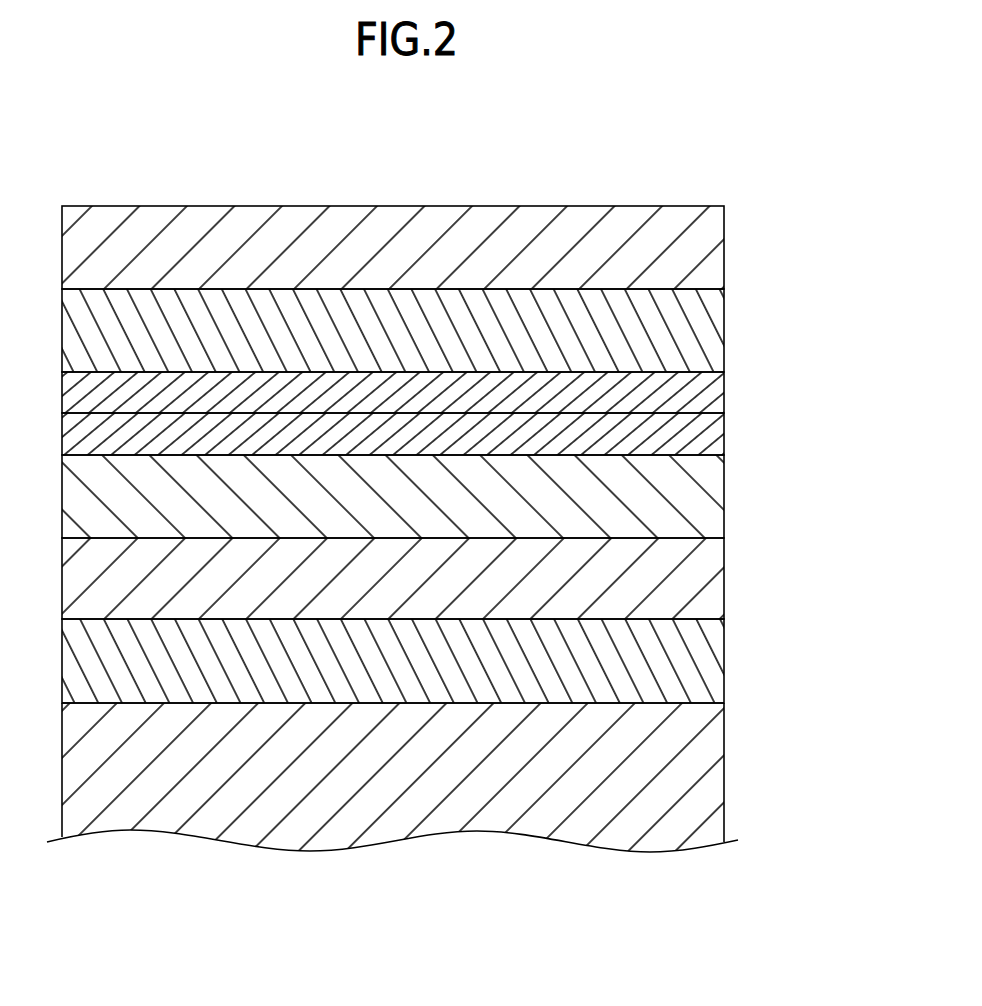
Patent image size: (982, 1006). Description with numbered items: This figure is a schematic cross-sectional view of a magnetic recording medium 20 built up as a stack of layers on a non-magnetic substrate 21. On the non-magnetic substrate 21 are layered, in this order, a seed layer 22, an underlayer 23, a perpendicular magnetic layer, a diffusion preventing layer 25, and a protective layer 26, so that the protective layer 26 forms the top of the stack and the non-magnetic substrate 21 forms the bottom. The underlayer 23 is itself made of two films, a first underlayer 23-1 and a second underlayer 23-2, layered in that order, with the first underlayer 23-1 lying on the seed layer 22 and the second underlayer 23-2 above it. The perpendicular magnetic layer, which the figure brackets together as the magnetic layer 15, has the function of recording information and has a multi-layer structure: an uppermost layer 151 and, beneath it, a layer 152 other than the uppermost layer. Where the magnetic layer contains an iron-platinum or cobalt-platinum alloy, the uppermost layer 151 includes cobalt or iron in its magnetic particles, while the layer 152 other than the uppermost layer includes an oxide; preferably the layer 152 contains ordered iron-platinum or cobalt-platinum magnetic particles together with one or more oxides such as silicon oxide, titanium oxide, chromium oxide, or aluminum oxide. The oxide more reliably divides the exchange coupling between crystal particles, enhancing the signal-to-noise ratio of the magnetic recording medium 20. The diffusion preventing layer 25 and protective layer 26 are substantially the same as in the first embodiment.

The magnetic recording medium 20 is at (462, 502).
The non-magnetic substrate 21 is at (710, 778).
The seed layer 22 is at (710, 660).
The underlayer 23 is at (469, 537).
The first underlayer 23-1 is at (443, 578).
The second underlayer 23-2 is at (712, 494).
The magnetic recording layer 15 is at (469, 413).
The first magnetic layer 151 is at (715, 390).
The layer other than the uppermost layer 152 is at (712, 431).
The diffusion preventing layer 25 is at (710, 328).
The protective layer 26 is at (710, 248).